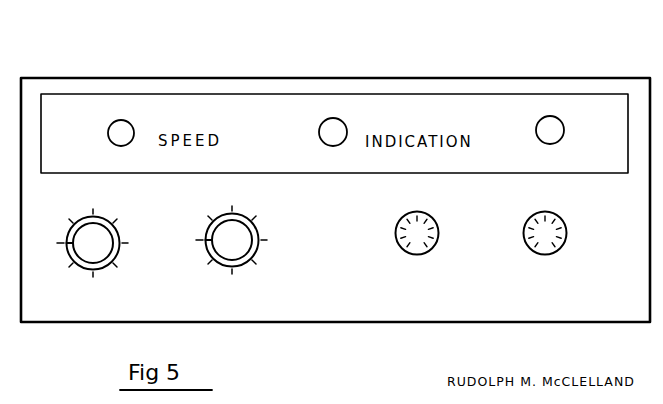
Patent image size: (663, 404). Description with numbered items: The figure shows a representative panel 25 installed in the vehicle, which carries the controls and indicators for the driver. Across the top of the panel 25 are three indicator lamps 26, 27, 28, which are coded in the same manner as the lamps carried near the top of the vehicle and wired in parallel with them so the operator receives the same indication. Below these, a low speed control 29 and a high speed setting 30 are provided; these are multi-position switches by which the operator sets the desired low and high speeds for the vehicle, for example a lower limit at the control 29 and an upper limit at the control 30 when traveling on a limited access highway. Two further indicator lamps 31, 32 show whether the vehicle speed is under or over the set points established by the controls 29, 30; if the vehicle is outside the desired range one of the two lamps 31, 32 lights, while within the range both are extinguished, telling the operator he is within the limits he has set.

The panel 25 is at (156, 64).
The indicator lamp 26 is at (110, 121).
The indicator lamp 27 is at (316, 140).
The indicator lamp 28 is at (545, 146).
The low speed control 29 is at (133, 244).
The high speed setting 30 is at (270, 247).
The indicator lamp 31 is at (440, 240).
The indicator lamp 32 is at (568, 247).